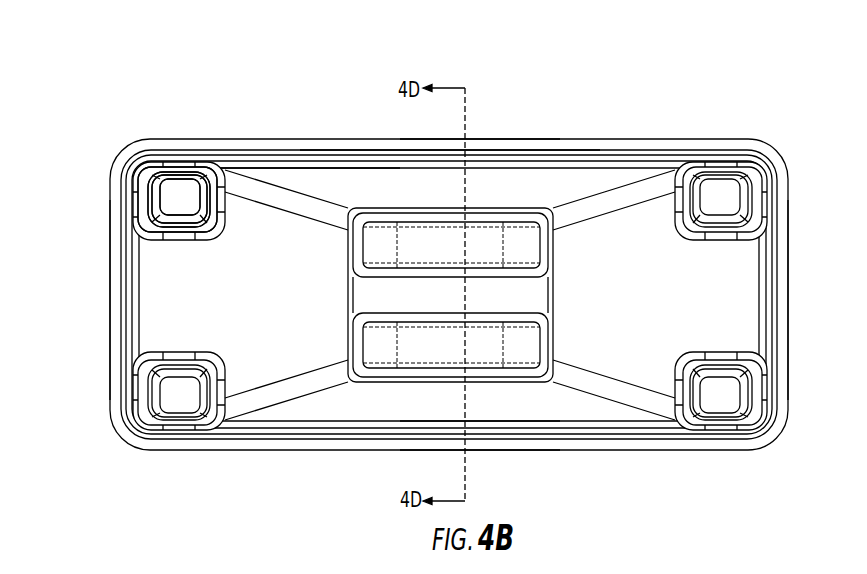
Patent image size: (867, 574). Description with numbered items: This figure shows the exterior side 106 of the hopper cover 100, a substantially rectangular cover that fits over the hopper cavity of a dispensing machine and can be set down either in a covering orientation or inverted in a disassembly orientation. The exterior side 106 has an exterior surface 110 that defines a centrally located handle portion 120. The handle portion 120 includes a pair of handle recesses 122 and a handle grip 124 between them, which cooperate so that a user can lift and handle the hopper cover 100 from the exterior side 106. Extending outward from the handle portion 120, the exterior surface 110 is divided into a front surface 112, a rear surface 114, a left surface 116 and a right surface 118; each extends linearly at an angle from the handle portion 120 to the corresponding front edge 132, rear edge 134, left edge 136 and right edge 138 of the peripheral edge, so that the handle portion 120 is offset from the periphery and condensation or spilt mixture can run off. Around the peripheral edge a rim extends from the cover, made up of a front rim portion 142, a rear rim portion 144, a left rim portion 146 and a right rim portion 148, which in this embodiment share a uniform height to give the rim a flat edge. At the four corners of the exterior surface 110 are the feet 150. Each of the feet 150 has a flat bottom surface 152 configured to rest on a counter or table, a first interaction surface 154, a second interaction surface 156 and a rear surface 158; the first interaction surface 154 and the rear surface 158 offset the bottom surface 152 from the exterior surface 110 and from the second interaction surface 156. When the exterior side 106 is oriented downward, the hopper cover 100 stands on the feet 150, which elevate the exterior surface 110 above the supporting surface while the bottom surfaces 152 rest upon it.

The hopper cover 100 is at (54, 152).
The exterior side 106 is at (699, 117).
The exterior surface 110 is at (361, 190).
The front surface 112 is at (242, 228).
The rear surface 114 is at (730, 270).
The left surface 116 is at (345, 400).
The right surface 118 is at (324, 180).
The handle portion 120 is at (557, 252).
The handle recesses 122 is at (481, 243).
The handle grip 124 is at (512, 297).
The front edge 132 is at (132, 322).
The rear edge 134 is at (767, 270).
The left edge 136 is at (528, 430).
The right edge 138 is at (545, 153).
The front rim portion 142 is at (110, 310).
The rear rim portion 144 is at (788, 300).
The left rim portion 146 is at (490, 450).
The right rim portion 148 is at (484, 150).
The feet 150 is at (208, 215).
The bottom surface 152 is at (186, 193).
The first interaction surface 154 is at (164, 172).
The second interaction surface 156 is at (148, 158).
The rear surface 158 is at (178, 219).